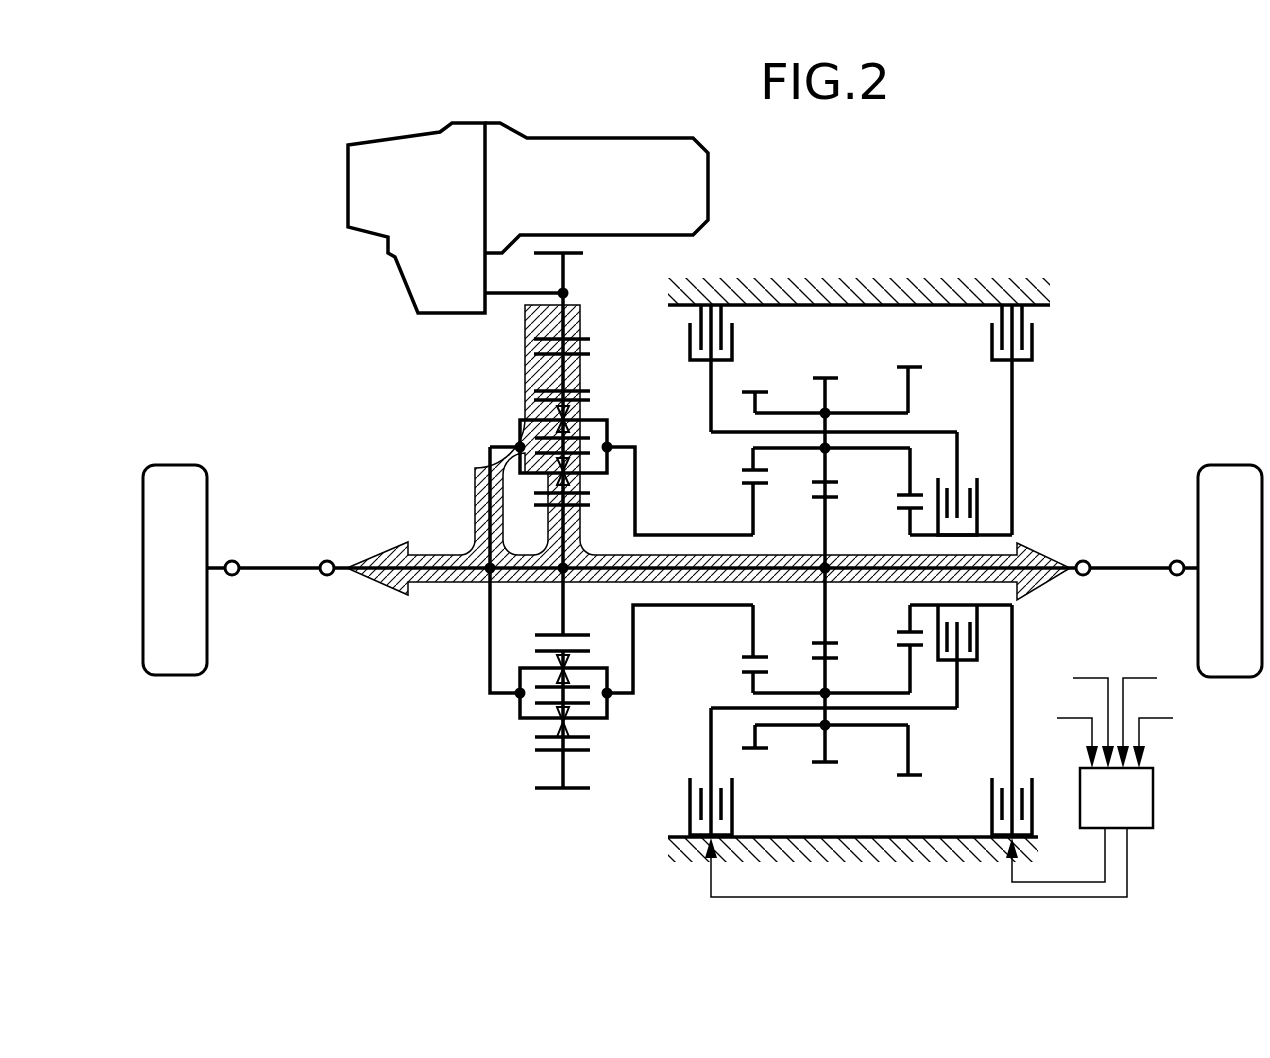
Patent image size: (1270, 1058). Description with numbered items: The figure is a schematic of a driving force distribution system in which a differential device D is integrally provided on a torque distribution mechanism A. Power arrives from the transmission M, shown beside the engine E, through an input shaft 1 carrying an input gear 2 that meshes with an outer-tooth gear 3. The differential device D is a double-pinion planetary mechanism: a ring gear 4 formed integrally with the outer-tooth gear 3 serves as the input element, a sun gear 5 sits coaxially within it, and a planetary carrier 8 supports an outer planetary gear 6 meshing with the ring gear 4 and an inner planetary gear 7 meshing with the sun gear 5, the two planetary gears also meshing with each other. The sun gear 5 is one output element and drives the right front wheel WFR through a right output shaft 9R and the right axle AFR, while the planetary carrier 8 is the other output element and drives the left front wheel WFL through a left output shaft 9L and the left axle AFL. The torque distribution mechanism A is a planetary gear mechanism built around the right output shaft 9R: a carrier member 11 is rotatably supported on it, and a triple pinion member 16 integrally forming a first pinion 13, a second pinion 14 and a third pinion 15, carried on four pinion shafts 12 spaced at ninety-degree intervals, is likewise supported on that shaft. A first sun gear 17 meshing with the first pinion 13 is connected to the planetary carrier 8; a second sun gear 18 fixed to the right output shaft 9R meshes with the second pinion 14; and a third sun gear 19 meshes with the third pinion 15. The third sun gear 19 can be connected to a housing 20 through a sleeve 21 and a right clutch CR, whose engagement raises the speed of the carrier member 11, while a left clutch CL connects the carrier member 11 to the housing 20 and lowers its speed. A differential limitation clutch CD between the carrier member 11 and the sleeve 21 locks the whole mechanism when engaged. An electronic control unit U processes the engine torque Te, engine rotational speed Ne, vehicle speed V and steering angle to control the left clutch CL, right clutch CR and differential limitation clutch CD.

The input shaft 1 is at (555, 291).
The input gear 2 is at (583, 253).
The outer-tooth gear 3 is at (590, 358).
The ring gear 4 is at (590, 392).
The sun gear 5 is at (549, 506).
The outer planetary gear 6 is at (590, 402).
The inner planetary gear 7 is at (590, 488).
The planetary carrier 8 is at (480, 475).
The left output shaft 9L is at (383, 553).
The right output shaft 9R is at (1020, 565).
The carrier member 11 is at (708, 408).
The pinion shafts 12 is at (908, 430).
The first pinion 13 is at (762, 390).
The second pinion 14 is at (832, 377).
The third pinion 15 is at (902, 365).
The triple pinion member 16 is at (869, 411).
The first sun gear 17 is at (742, 485).
The second sun gear 18 is at (818, 497).
The third sun gear 19 is at (897, 508).
The housing 20 is at (840, 297).
The sleeve 21 is at (992, 533).
The differential device D is at (497, 432).
The transmission M is at (418, 197).
The engine E is at (604, 193).
The torque distribution mechanism A is at (885, 256).
The left clutch CL is at (733, 328).
The right clutch CR is at (1034, 350).
The differential limitation clutch CD is at (983, 494).
The left front wheel WFL is at (181, 463).
The right front wheel WFR is at (1233, 462).
The left axle AFL is at (283, 560).
The right axle AFR is at (1125, 565).
The electronic control unit U is at (1103, 813).
The vehicle speed V is at (1093, 707).
The engine rotational speed Ne is at (1138, 707).
The engine torque Te is at (1157, 727).